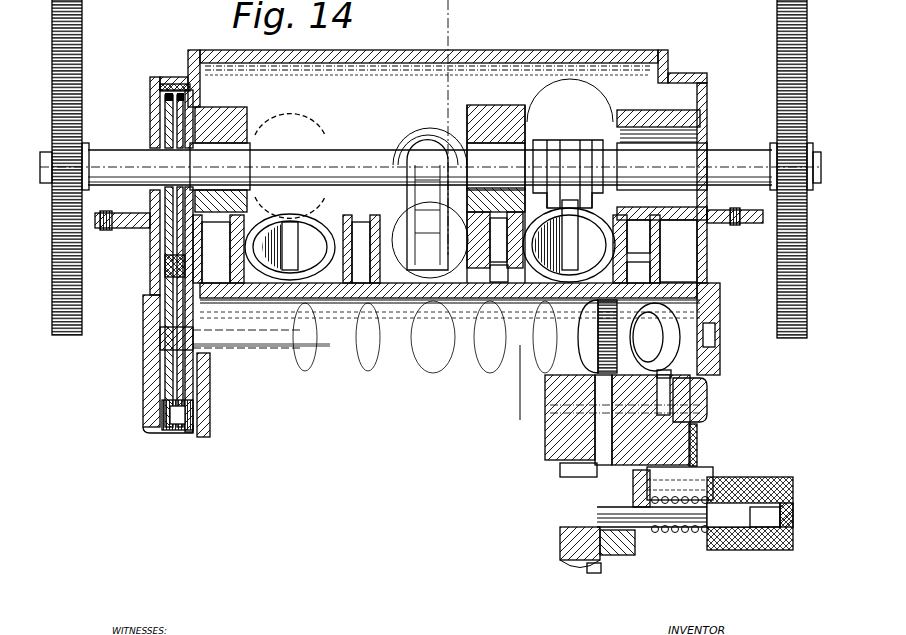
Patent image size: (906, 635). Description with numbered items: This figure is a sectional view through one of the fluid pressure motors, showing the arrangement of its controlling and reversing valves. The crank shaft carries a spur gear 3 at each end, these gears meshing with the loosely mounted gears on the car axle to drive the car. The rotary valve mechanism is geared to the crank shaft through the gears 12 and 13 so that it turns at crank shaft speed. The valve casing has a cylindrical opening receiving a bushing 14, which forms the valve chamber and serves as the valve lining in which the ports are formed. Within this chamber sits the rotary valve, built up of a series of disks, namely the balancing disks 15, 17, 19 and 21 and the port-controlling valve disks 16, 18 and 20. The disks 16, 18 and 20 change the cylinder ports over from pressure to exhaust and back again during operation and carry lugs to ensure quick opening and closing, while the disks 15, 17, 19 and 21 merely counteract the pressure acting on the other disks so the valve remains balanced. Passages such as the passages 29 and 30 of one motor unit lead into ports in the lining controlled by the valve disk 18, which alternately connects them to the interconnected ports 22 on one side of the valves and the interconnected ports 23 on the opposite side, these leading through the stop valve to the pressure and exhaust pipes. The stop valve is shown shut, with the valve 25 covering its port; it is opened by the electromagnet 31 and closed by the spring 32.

The spur gear 3 is at (83, 68).
The gear 12 is at (168, 112).
The gear 13 is at (147, 408).
The bushing 14 is at (720, 382).
The balancing disk 15 is at (285, 330).
The valve disk 16 is at (385, 189).
The balancing disk 17 is at (425, 322).
The valve disk 18 is at (518, 316).
The balancing disk 19 is at (578, 328).
The valve disk 20 is at (568, 360).
The balancing disk 21 is at (692, 330).
The interconnected ports 22 is at (698, 421).
The interconnected ports 23 is at (680, 405).
The valve 25 is at (640, 535).
The passage 29 is at (596, 619).
The passage 30 is at (508, 272).
The electromagnet 31 is at (757, 547).
The spring 32 is at (683, 533).